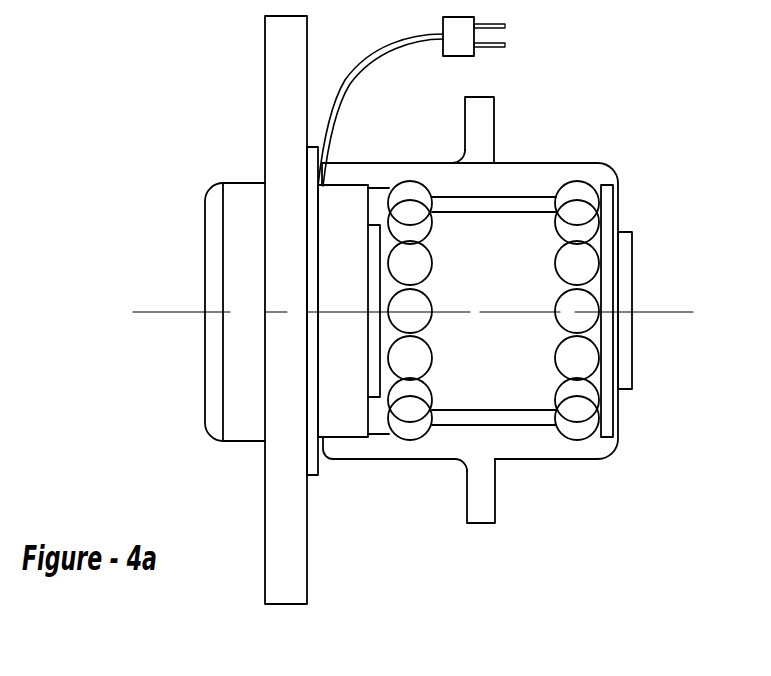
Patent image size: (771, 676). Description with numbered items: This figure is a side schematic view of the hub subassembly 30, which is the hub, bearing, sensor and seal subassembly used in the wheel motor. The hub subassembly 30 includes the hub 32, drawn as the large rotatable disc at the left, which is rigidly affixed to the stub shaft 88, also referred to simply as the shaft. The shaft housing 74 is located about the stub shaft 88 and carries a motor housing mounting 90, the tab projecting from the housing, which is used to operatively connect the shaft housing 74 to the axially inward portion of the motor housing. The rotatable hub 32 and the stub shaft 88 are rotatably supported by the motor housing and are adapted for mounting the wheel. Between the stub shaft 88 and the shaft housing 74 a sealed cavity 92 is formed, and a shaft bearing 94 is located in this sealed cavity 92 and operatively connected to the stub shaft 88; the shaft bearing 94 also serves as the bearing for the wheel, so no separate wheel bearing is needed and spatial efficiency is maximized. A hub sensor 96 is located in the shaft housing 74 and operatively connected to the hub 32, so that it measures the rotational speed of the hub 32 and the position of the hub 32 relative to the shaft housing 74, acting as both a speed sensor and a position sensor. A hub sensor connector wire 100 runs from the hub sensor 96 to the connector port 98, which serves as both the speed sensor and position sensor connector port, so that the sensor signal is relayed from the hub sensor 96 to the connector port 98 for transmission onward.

The hub subassembly 30 is at (210, 508).
The hub 32 is at (293, 606).
The shaft housing 74 is at (373, 459).
The stub shaft 88 is at (632, 248).
The motor housing mounting 90 is at (497, 492).
The sealed cavity 92 is at (514, 200).
The shaft bearing 94 is at (580, 217).
The hub sensor 96 is at (313, 147).
The connector port 98 is at (442, 22).
The hub sensor connector wire 100 is at (363, 77).